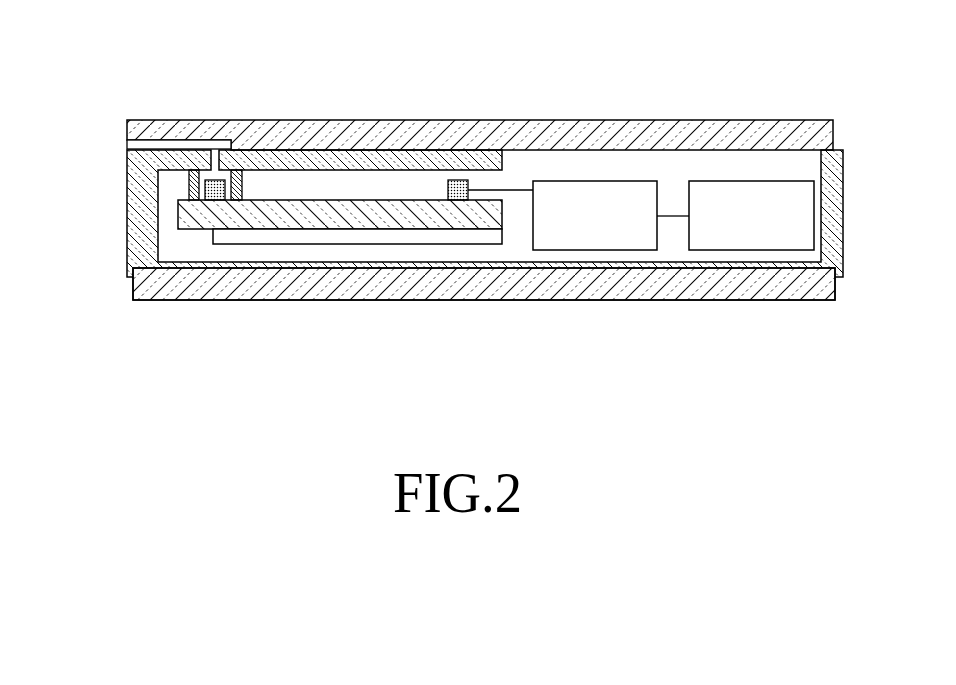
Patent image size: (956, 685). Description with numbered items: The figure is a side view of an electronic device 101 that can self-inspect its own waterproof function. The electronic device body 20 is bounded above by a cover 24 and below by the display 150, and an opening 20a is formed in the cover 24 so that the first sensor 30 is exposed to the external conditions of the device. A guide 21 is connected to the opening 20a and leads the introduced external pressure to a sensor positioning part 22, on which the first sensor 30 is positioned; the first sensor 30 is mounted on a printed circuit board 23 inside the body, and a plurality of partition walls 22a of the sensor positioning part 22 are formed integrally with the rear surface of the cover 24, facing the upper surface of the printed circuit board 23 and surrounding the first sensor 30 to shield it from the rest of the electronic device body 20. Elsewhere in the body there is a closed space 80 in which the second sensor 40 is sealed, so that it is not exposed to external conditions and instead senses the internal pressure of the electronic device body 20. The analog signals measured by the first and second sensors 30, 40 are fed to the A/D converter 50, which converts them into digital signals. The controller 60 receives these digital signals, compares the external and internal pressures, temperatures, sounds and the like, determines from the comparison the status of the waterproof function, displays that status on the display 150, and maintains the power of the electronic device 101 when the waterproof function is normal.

The electronic device 101 is at (783, 65).
The display 150 is at (524, 296).
The cover 24 is at (652, 132).
The opening 20a is at (127, 146).
The electronic device body 20 is at (188, 103).
The guide 21 is at (172, 142).
The sensor positioning part 22 is at (215, 178).
The partition walls 22a is at (243, 190).
The first sensor 30 is at (178, 205).
The printed circuit board 23 is at (338, 208).
The closed space 80 is at (390, 182).
The second sensor 40 is at (457, 180).
The A/D converter 50 is at (603, 181).
The controller 60 is at (745, 181).